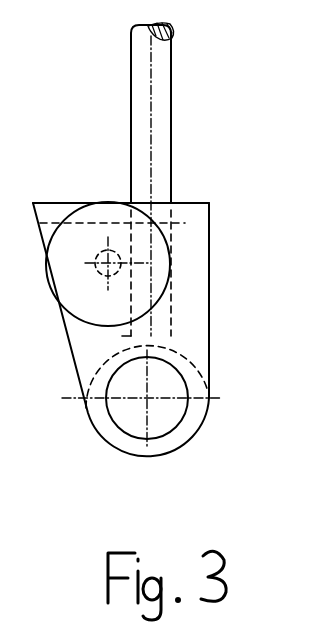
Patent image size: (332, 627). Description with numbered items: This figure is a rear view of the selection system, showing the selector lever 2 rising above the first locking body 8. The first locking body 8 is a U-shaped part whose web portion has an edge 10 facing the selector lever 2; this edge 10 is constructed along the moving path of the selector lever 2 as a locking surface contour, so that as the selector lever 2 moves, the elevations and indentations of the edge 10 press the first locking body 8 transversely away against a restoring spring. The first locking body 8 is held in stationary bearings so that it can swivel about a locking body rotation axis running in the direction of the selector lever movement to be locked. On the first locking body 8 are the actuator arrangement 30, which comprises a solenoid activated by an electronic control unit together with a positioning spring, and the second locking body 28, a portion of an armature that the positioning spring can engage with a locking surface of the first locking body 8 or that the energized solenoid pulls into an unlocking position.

The selector lever 2 is at (160, 78).
The first locking body 8 is at (205, 287).
The edge of the web portion (first locking surface contour) 10 is at (213, 212).
The second locking body 28 is at (102, 250).
The actuator arrangement 30 is at (85, 233).